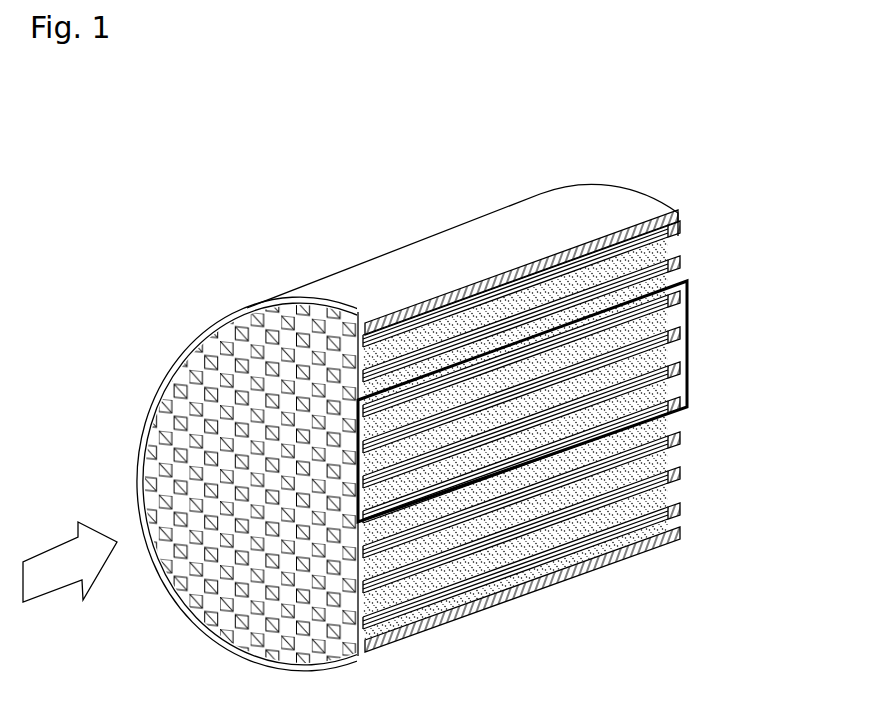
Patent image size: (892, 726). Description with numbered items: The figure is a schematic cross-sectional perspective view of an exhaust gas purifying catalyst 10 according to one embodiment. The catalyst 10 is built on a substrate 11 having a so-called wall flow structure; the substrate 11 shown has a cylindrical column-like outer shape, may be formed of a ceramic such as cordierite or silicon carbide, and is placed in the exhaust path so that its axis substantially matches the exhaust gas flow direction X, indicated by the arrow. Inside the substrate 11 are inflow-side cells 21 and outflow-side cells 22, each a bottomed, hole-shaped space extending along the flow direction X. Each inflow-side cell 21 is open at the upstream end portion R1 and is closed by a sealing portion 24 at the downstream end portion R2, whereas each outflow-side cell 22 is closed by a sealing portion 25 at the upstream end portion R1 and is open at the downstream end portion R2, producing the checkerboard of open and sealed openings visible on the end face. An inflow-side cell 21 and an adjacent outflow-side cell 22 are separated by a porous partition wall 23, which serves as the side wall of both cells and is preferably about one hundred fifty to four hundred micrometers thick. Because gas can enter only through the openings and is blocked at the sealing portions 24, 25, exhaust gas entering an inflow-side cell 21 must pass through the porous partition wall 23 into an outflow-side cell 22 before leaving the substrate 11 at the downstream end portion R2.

The exhaust gas purifying catalyst 10 is at (524, 125).
The substrate 11 is at (420, 263).
The inflow-side cell 21 is at (455, 596).
The outflow-side cell 22 is at (570, 571).
The partition wall 23 is at (626, 505).
The sealing portion 24 is at (681, 512).
The sealing portion 25 is at (371, 648).
The upstream end portion R1 is at (185, 355).
The downstream end portion R2 is at (681, 245).
The exhaust gas flow direction X is at (55, 572).